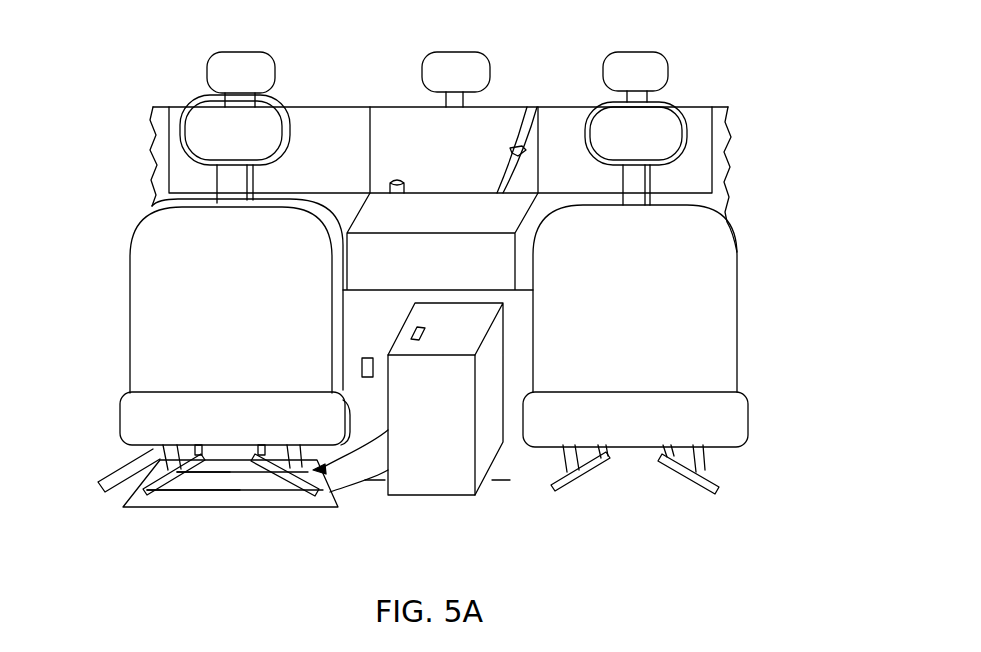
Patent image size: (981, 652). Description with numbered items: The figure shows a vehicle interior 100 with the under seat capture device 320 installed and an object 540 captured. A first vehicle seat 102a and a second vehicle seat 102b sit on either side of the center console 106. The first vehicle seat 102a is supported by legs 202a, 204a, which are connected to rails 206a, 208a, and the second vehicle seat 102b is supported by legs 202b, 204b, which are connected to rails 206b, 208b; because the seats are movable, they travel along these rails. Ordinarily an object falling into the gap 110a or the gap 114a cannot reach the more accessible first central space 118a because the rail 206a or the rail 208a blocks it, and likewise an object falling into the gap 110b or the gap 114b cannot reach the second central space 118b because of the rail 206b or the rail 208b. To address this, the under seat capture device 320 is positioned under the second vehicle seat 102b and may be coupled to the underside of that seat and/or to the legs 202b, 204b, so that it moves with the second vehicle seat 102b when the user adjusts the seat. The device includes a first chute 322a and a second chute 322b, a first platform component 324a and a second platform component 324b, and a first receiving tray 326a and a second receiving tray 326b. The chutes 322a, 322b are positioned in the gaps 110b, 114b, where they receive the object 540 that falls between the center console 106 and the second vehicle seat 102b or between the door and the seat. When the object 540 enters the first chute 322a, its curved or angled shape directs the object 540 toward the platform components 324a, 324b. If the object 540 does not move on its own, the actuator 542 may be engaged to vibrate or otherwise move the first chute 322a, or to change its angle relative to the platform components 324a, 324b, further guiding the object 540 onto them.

The vehicle interior 100 is at (755, 94).
The first vehicle seat 102a is at (674, 331).
The second vehicle seat 102b is at (260, 331).
The center console 106 is at (445, 399).
The gap 110a is at (498, 489).
The gap 110b is at (373, 489).
The gap 114a is at (669, 274).
The gap 114b is at (208, 270).
The first central space 118a is at (669, 536).
The second central space 118b is at (203, 518).
The leg 202a is at (555, 468).
The leg 202b is at (343, 492).
The leg 204a is at (717, 468).
The leg 204b is at (143, 480).
The rail 206a is at (589, 487).
The rail 206b is at (279, 494).
The rail 208a is at (692, 493).
The rail 208b is at (176, 494).
The under seat capture device 320 is at (191, 506).
The first chute 322a is at (383, 466).
The second chute 322b is at (142, 466).
The first platform component 324a is at (235, 485).
The second platform component 324b is at (196, 455).
The first receiving tray 326a is at (215, 497).
The second receiving tray 326b is at (262, 452).
The object 540 is at (368, 413).
The actuator 542 is at (425, 330).